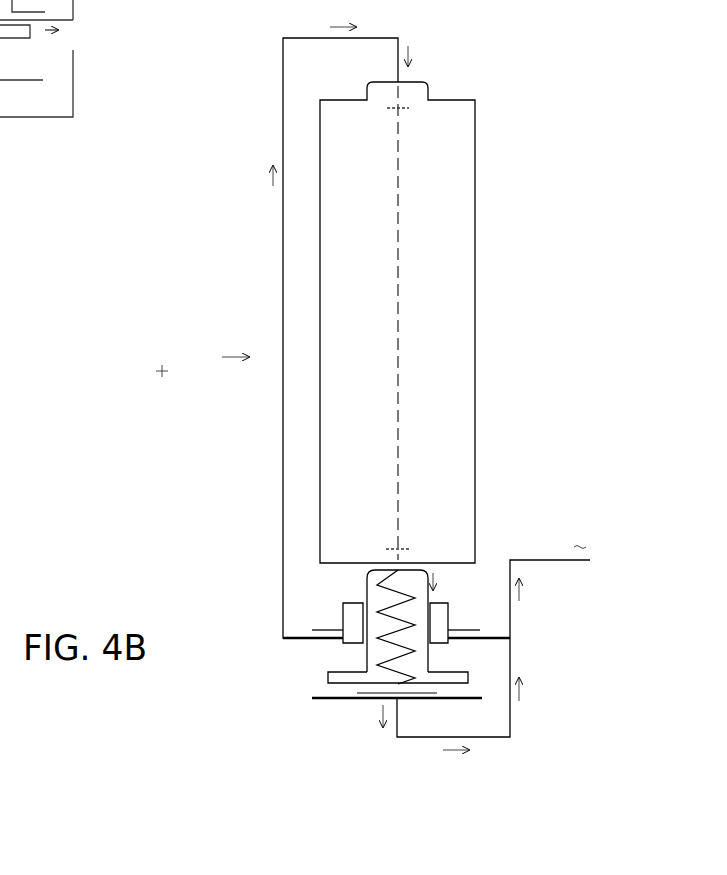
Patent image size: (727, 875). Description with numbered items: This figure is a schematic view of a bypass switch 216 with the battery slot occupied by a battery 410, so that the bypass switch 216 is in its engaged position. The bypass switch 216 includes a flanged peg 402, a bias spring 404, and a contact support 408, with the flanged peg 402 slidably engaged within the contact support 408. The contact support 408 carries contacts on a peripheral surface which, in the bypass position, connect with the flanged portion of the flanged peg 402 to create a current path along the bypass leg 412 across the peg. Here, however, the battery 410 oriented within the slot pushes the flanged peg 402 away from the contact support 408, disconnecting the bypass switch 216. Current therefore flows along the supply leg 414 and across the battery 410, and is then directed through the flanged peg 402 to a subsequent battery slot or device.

The battery 410 is at (418, 319).
The supply leg 414 is at (283, 197).
The bypass leg 412 is at (283, 476).
The bypass switch 216 is at (349, 587).
The contact support 408 is at (448, 621).
The flanged peg 402 is at (328, 681).
The bias spring 404 is at (390, 670).